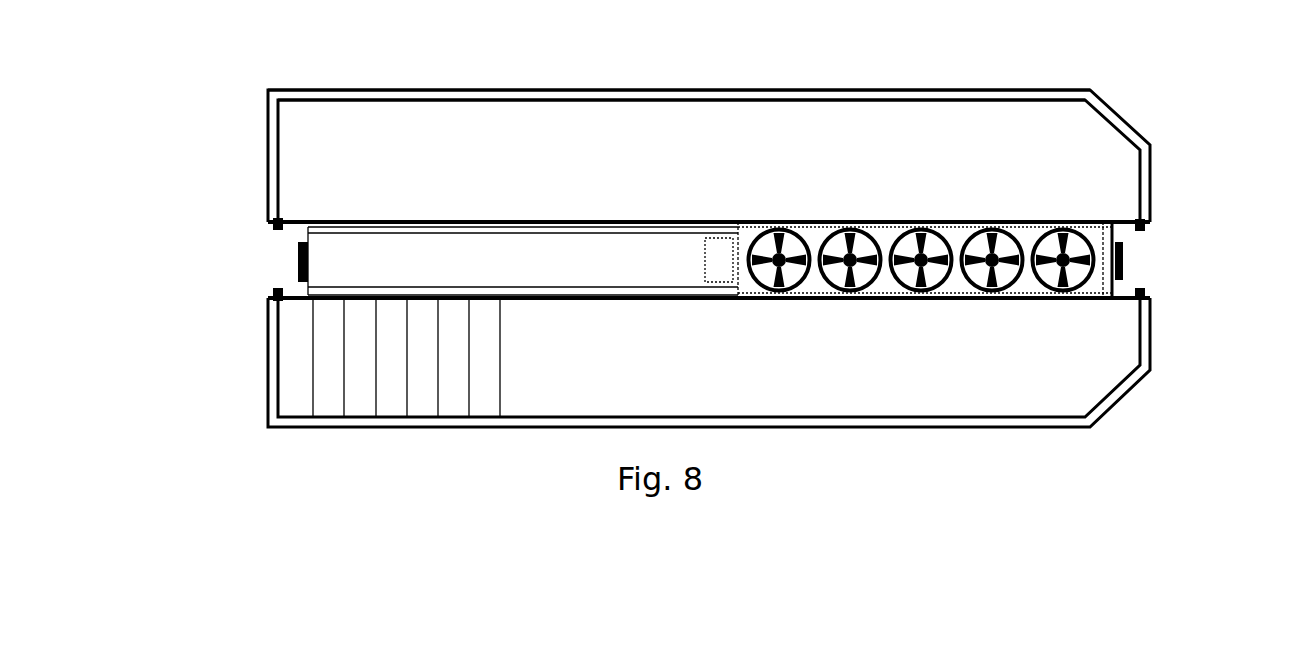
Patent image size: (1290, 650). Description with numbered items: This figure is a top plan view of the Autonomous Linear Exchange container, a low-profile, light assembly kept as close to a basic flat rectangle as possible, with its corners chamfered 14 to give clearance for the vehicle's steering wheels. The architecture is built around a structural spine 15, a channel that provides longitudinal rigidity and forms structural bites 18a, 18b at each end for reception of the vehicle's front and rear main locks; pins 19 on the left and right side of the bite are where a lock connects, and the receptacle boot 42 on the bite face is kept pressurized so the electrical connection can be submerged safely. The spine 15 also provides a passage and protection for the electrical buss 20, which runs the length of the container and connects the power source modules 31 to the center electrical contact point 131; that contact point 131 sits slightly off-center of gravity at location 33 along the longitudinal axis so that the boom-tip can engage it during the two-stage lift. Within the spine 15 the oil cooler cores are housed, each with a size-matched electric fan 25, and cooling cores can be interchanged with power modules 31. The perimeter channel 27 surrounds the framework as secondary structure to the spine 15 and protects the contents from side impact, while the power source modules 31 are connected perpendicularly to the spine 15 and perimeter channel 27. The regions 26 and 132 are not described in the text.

The chamfered corners 14 is at (1120, 118).
The chamber 26 is at (640, 178).
The perimeter channel 27 is at (920, 95).
The upper housing portion 132 is at (506, 45).
The location 33 is at (511, 50).
The electrical buss 20 is at (392, 227).
The spine 15 is at (512, 273).
The power source modules 31 is at (404, 373).
The center electrical contact point 131 is at (722, 275).
The electric fan 25 is at (910, 270).
The receptacle boot 42 is at (1125, 260).
The front structural bite 18a is at (298, 265).
The rear structural bite 18b is at (1128, 253).
The pins 19 is at (273, 290).